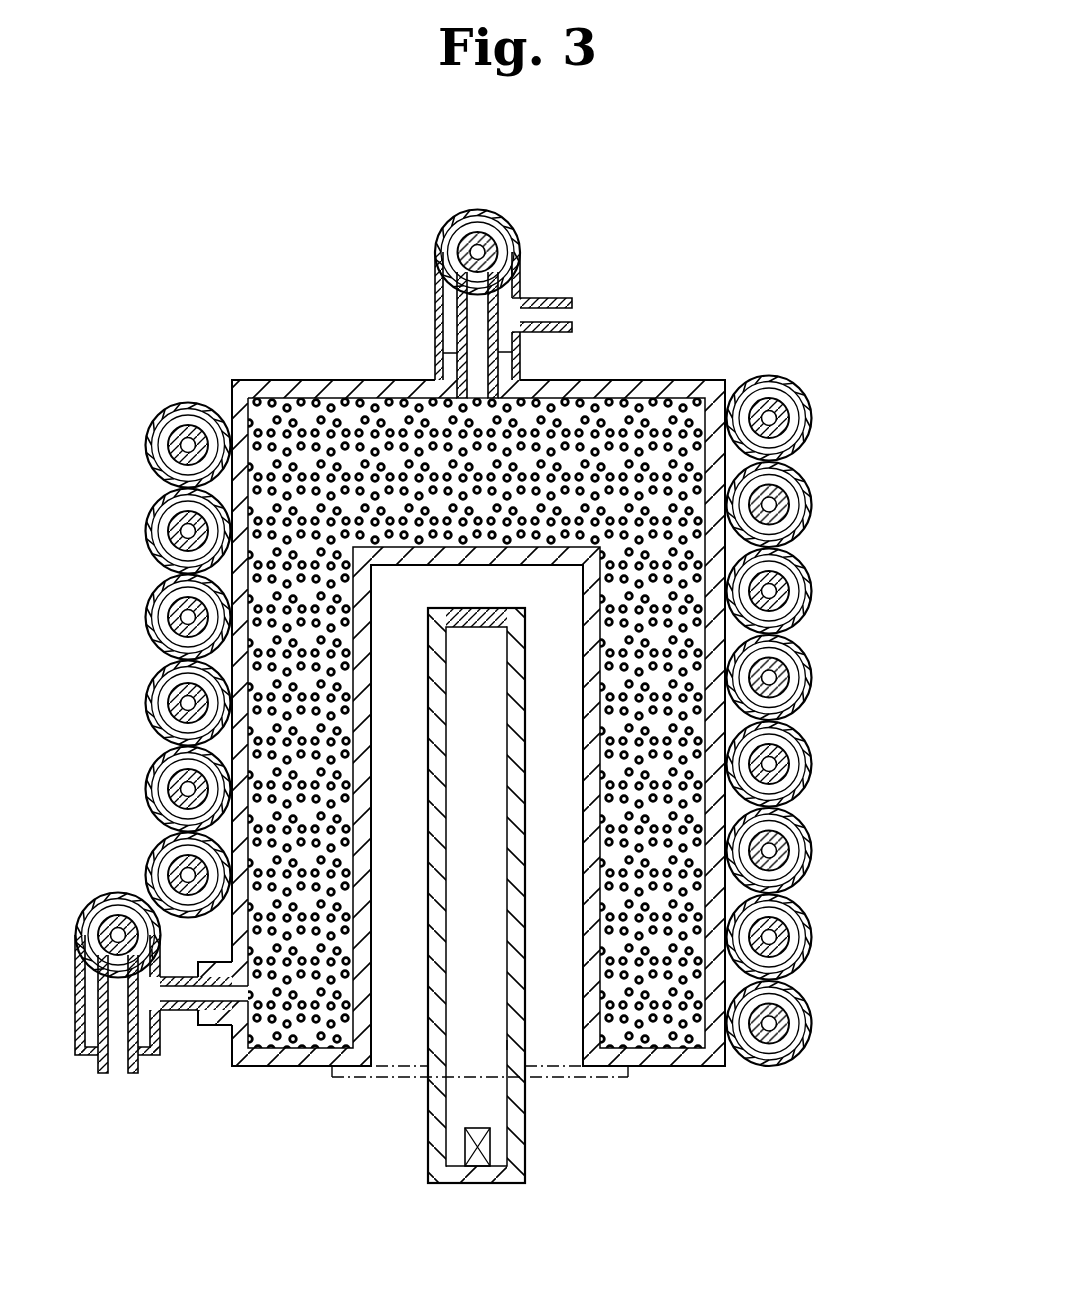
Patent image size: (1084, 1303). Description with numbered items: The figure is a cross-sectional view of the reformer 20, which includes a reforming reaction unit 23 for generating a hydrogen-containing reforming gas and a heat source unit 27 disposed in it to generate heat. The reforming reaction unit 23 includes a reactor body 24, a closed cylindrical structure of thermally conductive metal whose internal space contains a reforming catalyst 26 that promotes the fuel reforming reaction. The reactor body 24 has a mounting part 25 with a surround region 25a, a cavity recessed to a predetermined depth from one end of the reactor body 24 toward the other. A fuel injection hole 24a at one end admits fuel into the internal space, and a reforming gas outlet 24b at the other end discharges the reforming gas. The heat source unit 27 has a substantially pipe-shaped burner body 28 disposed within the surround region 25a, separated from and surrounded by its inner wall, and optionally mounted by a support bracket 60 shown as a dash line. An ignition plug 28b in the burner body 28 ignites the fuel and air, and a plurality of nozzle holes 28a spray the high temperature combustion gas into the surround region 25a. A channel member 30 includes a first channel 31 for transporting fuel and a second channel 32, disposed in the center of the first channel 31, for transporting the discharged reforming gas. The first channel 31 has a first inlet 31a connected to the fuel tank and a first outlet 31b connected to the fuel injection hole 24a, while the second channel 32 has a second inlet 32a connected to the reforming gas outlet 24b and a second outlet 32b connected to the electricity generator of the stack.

The reformer 20 is at (880, 245).
The reforming reaction unit 23 is at (685, 380).
The reactor body 24 is at (718, 452).
The fuel injection hole 24a is at (213, 1020).
The reforming gas outlet 24b is at (440, 362).
The mounting part 25 is at (405, 1040).
The surround region 25a is at (560, 886).
The reforming catalyst 26 is at (672, 1045).
The heat source unit 27 is at (425, 1182).
The burner body 28 is at (522, 1117).
The nozzle holes 28a is at (527, 1045).
The ignition plug 28b is at (492, 1152).
The channel member 30 is at (520, 222).
The first channel 31 is at (440, 295).
The first inlet 31a is at (572, 299).
The first outlet 31b is at (195, 995).
The second channel 32 is at (503, 313).
The second inlet 32a is at (478, 405).
The second outlet 32b is at (120, 1075).
The support bracket 60 is at (343, 1077).